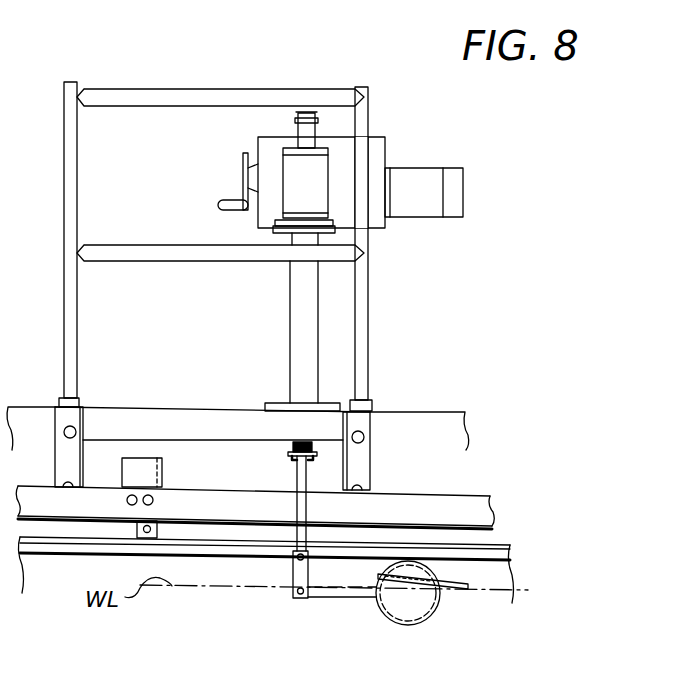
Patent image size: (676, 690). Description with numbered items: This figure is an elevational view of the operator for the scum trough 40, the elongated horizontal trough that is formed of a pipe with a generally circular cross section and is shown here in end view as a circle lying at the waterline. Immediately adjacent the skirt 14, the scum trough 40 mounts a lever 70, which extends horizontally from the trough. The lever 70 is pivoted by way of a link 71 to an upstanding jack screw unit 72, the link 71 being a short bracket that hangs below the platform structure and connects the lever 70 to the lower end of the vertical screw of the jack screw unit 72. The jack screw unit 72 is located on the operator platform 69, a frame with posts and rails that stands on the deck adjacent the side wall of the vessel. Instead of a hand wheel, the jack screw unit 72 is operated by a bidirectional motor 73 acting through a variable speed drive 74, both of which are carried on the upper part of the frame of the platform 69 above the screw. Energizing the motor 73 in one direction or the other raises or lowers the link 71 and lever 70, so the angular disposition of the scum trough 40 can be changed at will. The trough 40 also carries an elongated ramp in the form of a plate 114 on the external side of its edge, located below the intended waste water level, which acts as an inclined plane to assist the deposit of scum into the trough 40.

The skirt 14 is at (510, 567).
The scum trough 40 is at (418, 628).
The operator platform 69 is at (162, 407).
The lever 70 is at (343, 595).
The link 71 is at (293, 572).
The jack screw unit 72 is at (302, 332).
The bidirectional motor 73 is at (428, 170).
The variable speed drive 74 is at (268, 147).
The plate 114 is at (478, 582).